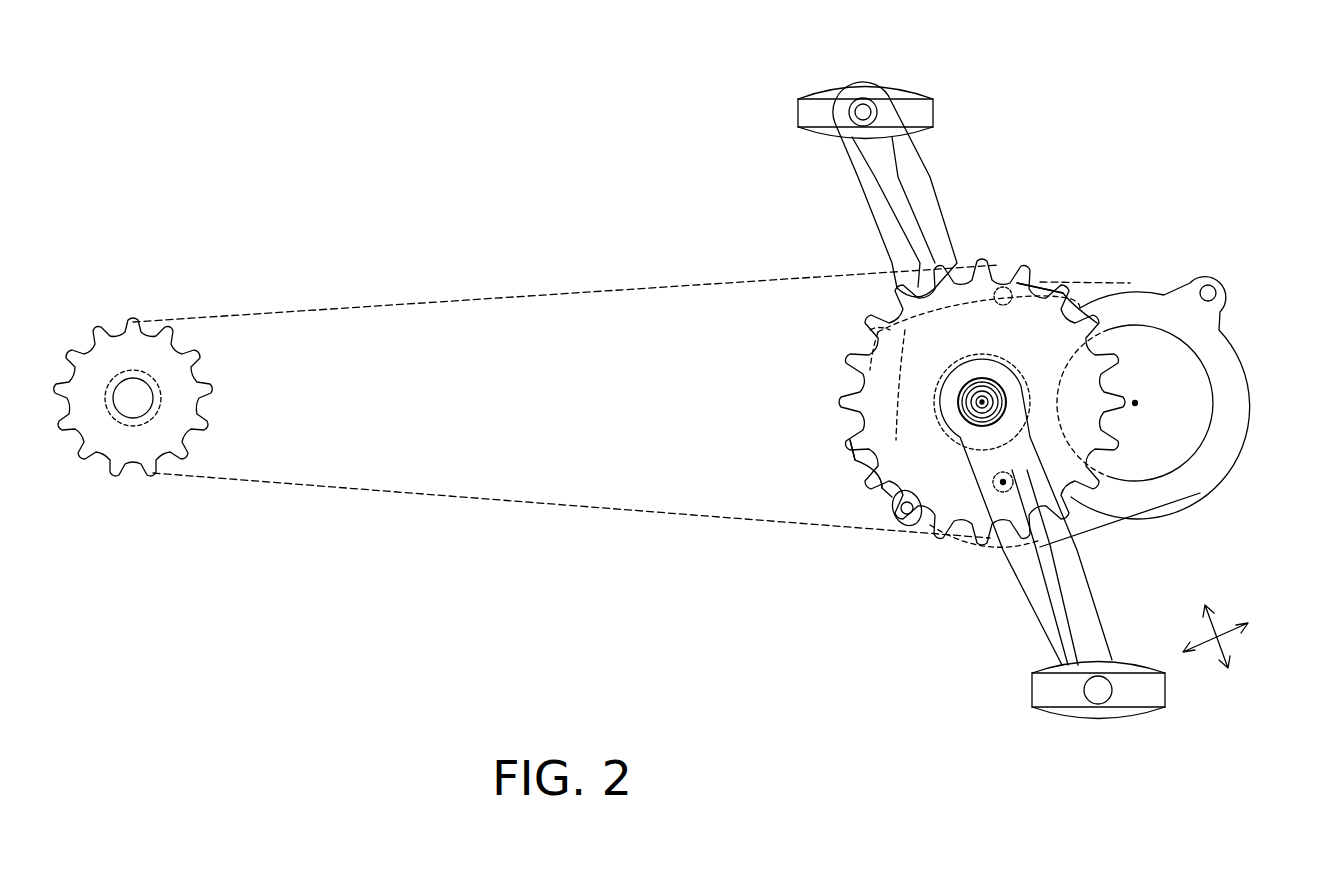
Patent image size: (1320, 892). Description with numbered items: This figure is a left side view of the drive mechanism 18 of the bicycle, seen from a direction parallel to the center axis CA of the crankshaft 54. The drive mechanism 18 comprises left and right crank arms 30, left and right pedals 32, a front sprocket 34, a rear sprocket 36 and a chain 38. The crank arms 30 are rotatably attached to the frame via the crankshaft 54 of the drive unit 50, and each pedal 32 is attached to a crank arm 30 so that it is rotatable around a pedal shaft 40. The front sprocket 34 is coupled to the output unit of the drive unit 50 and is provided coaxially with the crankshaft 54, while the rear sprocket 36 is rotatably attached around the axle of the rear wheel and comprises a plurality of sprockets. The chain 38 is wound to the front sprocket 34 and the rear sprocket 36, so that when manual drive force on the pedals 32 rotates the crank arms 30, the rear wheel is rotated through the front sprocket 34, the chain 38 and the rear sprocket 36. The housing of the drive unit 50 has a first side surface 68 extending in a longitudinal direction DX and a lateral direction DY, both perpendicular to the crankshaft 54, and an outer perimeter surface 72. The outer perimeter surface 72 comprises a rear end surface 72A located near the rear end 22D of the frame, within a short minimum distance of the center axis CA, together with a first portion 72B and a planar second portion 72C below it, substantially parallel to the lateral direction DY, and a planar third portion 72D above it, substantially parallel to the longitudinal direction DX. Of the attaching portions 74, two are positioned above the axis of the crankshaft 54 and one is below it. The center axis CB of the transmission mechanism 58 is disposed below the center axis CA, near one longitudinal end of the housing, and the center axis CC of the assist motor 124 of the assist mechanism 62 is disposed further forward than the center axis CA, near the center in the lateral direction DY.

The drive mechanism 18 is at (552, 204).
The rear end 22D is at (160, 383).
The rear sprocket 36 is at (212, 392).
The chain 38 is at (560, 512).
The front sprocket 34 is at (846, 400).
The crank arm 30 is at (938, 188).
The pedal 32 is at (933, 114).
The pedal shaft 40 is at (862, 98).
The crankshaft 54 is at (985, 376).
The transmission mechanism 58 is at (980, 548).
The assist mechanism 62 is at (1212, 352).
The first side surface 68 is at (1168, 508).
The outer perimeter surface 72 is at (1161, 290).
The rear end surface 72A is at (880, 322).
The first portion 72B is at (862, 355).
The second portion 72C is at (882, 490).
The third portion 72D is at (1050, 290).
The attaching portion 74 is at (1008, 272).
The drive unit 50 is at (1247, 353).
The assist motor 124 is at (1213, 410).
The center axis of the crankshaft CA is at (996, 392).
The center axis of the transmission mechanism CB is at (1138, 402).
The center axis of the assist motor CC is at (1002, 490).
The longitudinal direction DX is at (1238, 640).
The lateral direction DY is at (1220, 614).